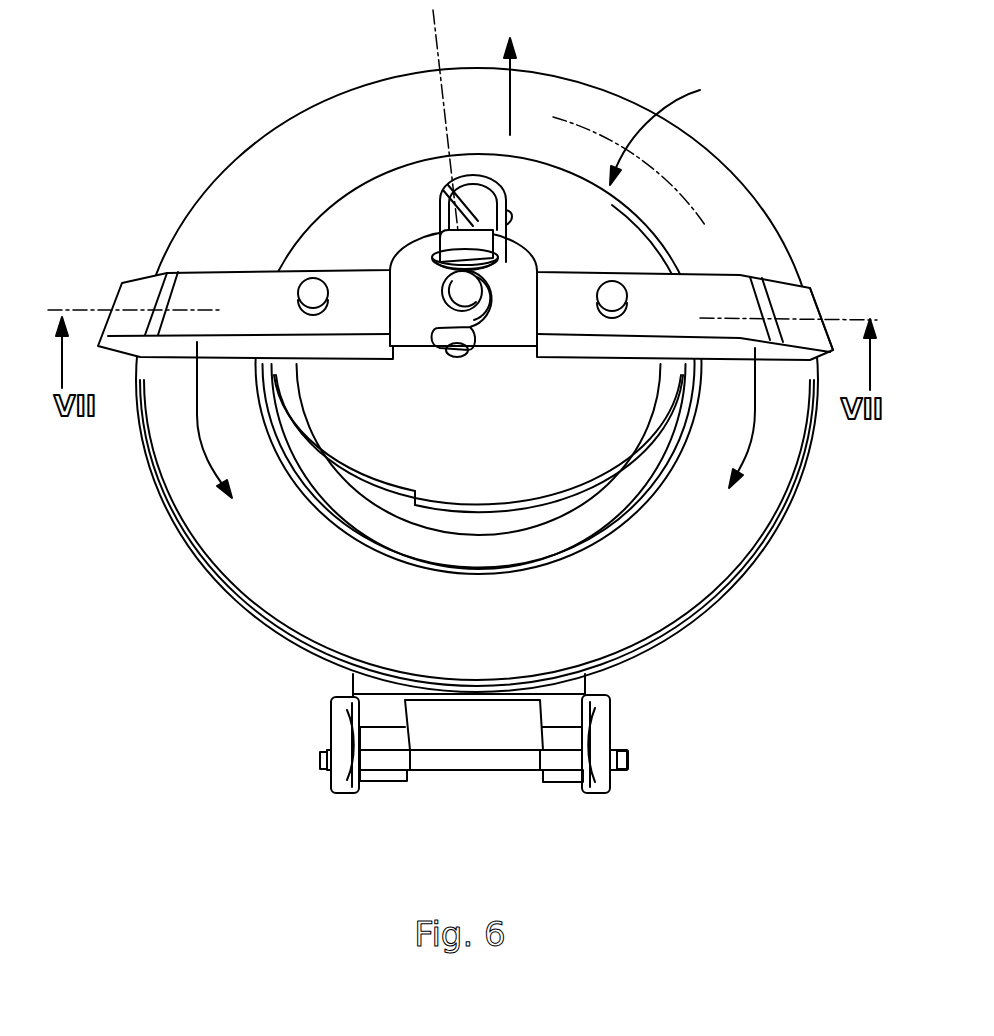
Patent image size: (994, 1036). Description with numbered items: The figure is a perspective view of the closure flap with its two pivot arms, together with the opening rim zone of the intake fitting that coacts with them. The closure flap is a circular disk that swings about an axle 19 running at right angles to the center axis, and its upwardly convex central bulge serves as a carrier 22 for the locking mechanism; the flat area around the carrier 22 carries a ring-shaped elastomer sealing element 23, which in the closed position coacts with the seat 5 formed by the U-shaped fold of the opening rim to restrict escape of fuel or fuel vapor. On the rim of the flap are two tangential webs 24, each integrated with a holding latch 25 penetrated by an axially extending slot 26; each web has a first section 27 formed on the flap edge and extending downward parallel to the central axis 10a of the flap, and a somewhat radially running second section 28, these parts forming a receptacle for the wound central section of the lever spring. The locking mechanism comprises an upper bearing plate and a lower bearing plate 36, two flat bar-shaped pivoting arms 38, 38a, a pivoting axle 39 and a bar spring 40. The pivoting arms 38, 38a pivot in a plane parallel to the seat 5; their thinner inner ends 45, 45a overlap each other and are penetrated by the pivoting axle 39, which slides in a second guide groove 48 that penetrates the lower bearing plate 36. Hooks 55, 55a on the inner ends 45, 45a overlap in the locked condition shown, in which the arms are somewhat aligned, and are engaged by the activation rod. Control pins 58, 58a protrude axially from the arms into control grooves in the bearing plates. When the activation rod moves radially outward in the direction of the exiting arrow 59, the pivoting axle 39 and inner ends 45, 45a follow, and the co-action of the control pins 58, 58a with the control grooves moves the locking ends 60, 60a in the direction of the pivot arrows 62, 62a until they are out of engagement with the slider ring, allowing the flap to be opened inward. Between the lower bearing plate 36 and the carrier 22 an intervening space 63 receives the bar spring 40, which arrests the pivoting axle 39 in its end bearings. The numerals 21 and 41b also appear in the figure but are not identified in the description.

The seat 5 is at (677, 183).
The central axis 10a is at (433, 42).
The axle 19 is at (485, 760).
The rotation direction 21 is at (670, 130).
The carrier 22 is at (437, 551).
The sealing element 23 is at (672, 584).
The webs 24 is at (393, 797).
The holding latch 25 is at (342, 748).
The slot 26 is at (608, 748).
The first section 27 is at (383, 712).
The second section 28 is at (398, 740).
The lower bearing plate 36 is at (476, 484).
The pivoting arm 38 is at (226, 280).
The pivoting arm 38a is at (711, 280).
The pivoting axle 39 is at (452, 291).
The bar spring 40 is at (470, 200).
The inner ring 41b is at (577, 435).
The inner end 45 is at (450, 331).
The inner end 45a is at (450, 354).
The second guide groove 48 is at (487, 217).
The hook 55 is at (437, 238).
The hook 55a is at (496, 268).
The control pin 58 is at (313, 288).
The control pin 58a is at (612, 292).
The exiting arrow 59 is at (512, 97).
The locking end 60 is at (192, 290).
The locking end 60a is at (742, 290).
The pivot arrow 62 is at (196, 430).
The pivot arrow 62a is at (758, 445).
The intervening space 63 is at (468, 518).